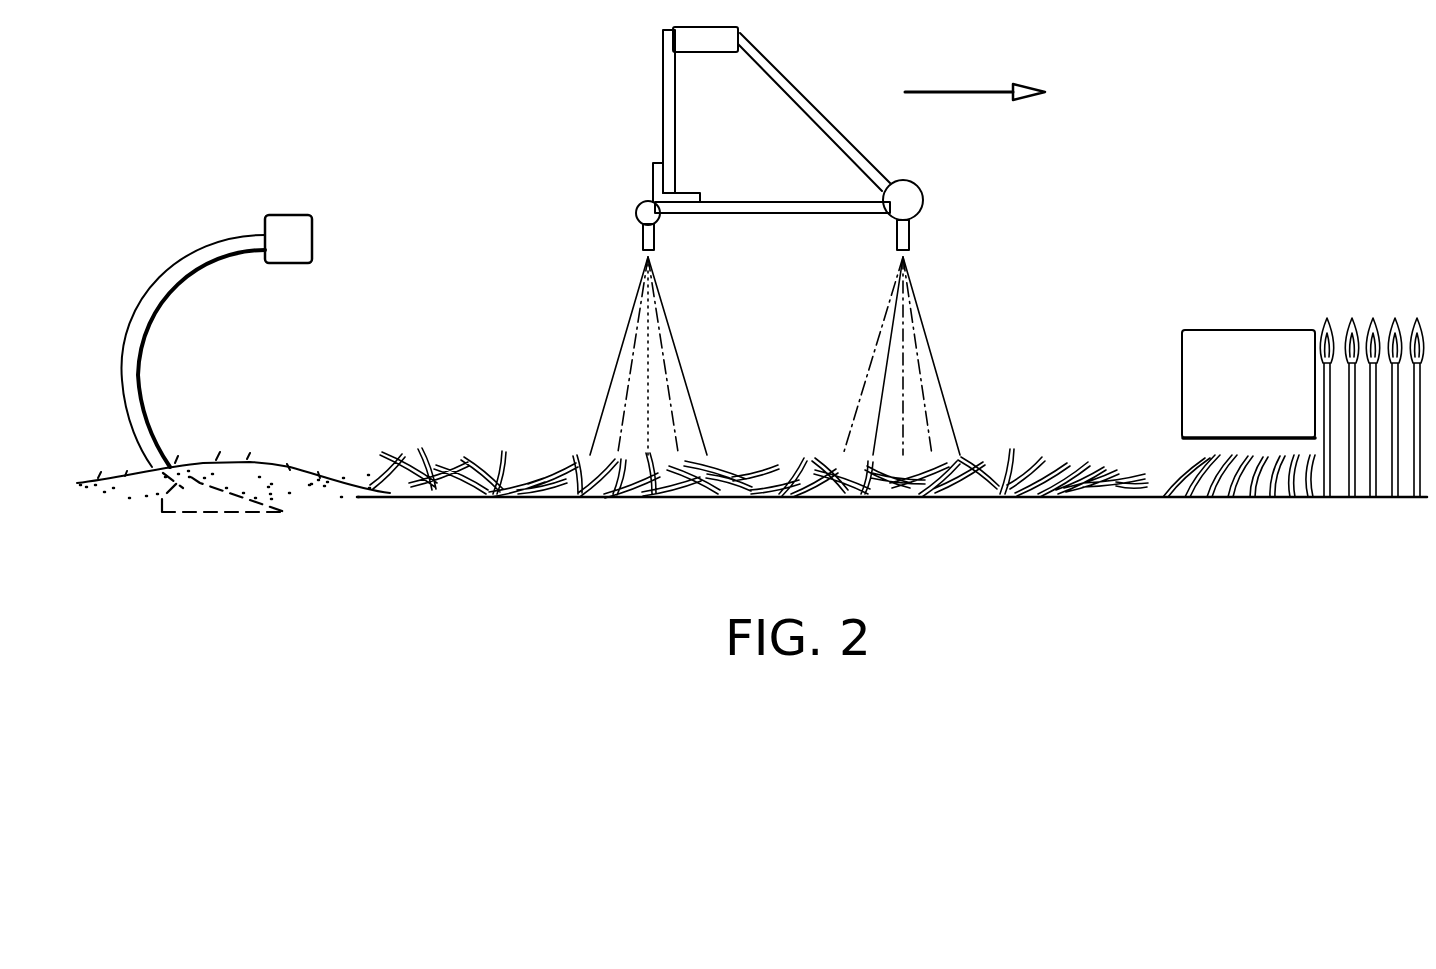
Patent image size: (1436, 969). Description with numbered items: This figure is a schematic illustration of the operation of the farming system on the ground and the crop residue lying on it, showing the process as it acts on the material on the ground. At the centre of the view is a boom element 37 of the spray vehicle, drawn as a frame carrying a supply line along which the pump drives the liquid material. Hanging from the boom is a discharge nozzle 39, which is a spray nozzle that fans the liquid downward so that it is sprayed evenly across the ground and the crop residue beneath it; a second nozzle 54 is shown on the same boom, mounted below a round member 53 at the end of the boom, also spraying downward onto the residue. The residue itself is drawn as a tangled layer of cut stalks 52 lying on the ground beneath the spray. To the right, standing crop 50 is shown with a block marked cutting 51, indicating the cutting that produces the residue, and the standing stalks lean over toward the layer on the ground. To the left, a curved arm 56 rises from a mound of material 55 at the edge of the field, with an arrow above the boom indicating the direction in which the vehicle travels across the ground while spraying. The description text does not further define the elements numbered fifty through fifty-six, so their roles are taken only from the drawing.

The boom element 37 is at (656, 100).
The discharge nozzle 39 is at (642, 240).
The standing stalks being burned 50 is at (1371, 313).
The cutting station 51 is at (1232, 332).
The cut stalks lying on ground 52 is at (1066, 438).
The tank / pivot joint 53 is at (910, 192).
The second spray nozzle 54 is at (911, 240).
The windrow pile of residue 55 is at (262, 459).
The curved pickup arm 56 is at (143, 369).